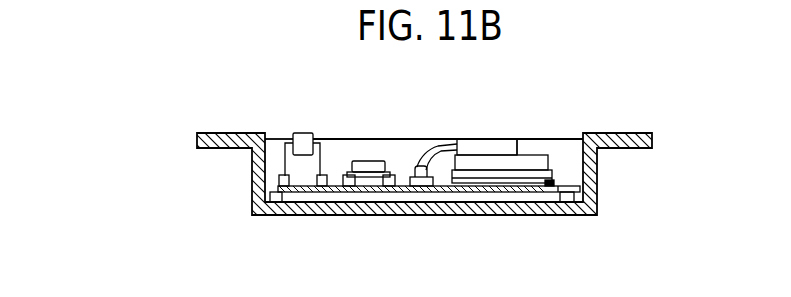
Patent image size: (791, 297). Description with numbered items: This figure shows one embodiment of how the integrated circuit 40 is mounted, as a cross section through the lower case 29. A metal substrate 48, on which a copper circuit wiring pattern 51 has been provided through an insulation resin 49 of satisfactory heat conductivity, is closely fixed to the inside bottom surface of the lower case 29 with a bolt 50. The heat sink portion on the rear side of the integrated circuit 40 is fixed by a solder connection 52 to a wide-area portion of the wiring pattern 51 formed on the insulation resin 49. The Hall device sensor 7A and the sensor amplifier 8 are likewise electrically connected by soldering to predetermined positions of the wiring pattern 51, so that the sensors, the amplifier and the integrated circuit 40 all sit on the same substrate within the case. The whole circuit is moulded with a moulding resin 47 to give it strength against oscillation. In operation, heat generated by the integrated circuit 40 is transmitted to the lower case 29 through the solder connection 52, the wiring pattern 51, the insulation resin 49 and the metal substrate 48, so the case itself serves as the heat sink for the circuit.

The Hall device sensor 7A is at (301, 132).
The sensor amplifier 8 is at (363, 160).
The lower case 29 is at (252, 192).
The integrated circuit 40 is at (488, 139).
The moulding resin 47 is at (406, 150).
The metal substrate 48 is at (315, 198).
The insulation resin 49 is at (375, 205).
The bolt 50 is at (282, 214).
The wiring pattern 51 is at (558, 178).
The solder connection 52 is at (524, 172).